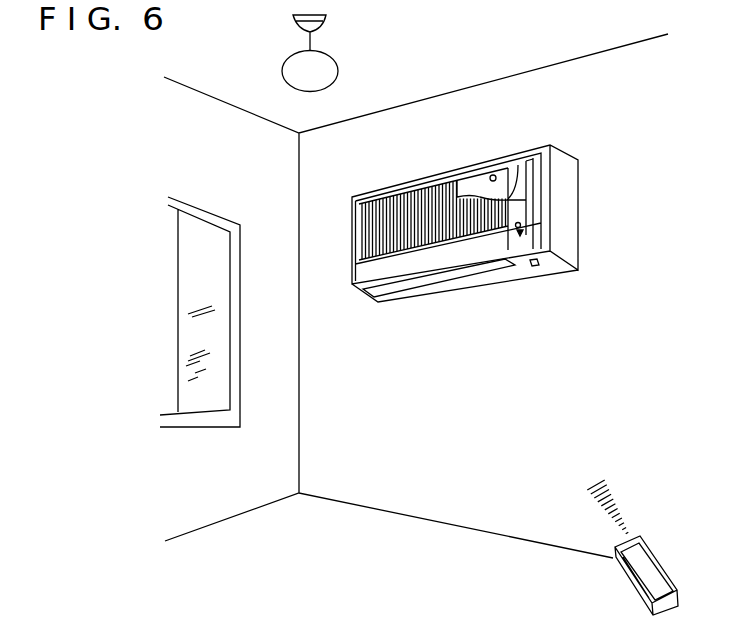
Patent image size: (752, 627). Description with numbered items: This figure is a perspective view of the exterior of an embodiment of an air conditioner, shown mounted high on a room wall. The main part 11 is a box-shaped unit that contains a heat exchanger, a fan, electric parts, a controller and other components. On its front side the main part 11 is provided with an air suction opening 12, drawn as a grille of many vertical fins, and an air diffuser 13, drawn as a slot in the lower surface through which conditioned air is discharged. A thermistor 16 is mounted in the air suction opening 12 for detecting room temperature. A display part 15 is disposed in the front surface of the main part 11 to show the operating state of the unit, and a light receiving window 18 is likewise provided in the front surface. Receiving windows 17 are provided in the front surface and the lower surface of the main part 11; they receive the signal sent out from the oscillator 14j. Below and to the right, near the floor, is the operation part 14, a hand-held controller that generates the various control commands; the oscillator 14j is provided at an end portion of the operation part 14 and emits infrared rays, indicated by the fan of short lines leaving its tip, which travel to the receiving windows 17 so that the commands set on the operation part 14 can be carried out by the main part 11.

The main part 11 is at (567, 177).
The air suction opening 12 is at (367, 231).
The air diffuser 13 is at (443, 278).
The operation part 14 is at (657, 570).
The oscillator 14j is at (632, 536).
The display part 15 is at (517, 166).
The thermistor 16 is at (492, 175).
The receiving windows 17 is at (535, 267).
The light receiving window 18 is at (521, 225).